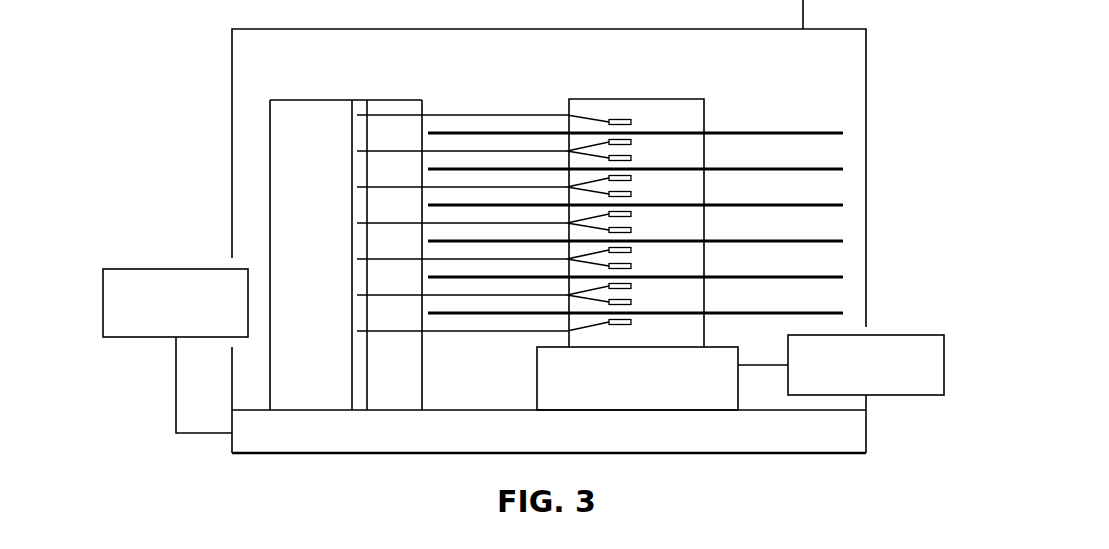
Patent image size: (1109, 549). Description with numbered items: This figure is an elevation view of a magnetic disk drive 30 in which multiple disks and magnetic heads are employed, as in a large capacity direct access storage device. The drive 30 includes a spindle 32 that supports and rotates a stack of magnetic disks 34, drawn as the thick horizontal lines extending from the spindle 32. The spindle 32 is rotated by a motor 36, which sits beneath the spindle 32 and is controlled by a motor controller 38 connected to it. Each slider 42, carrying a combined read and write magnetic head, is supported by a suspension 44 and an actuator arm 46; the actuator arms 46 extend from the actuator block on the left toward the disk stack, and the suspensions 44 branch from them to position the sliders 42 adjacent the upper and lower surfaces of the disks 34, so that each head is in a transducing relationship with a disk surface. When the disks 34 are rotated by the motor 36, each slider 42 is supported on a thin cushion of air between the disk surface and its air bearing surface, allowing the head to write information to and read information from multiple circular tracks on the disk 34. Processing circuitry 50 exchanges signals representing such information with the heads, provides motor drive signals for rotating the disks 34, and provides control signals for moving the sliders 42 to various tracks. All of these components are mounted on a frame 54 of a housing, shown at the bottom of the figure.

The magnetic disk drive 30 is at (752, 104).
The spindle 32 is at (692, 99).
The magnetic disk 34 is at (835, 134).
The motor 36 is at (651, 389).
The motor controller 38 is at (903, 396).
The slider 42 is at (632, 142).
The suspension 44 is at (602, 153).
The actuator arm 46 is at (538, 151).
The processing circuitry 50 is at (147, 268).
The frame 54 is at (288, 447).